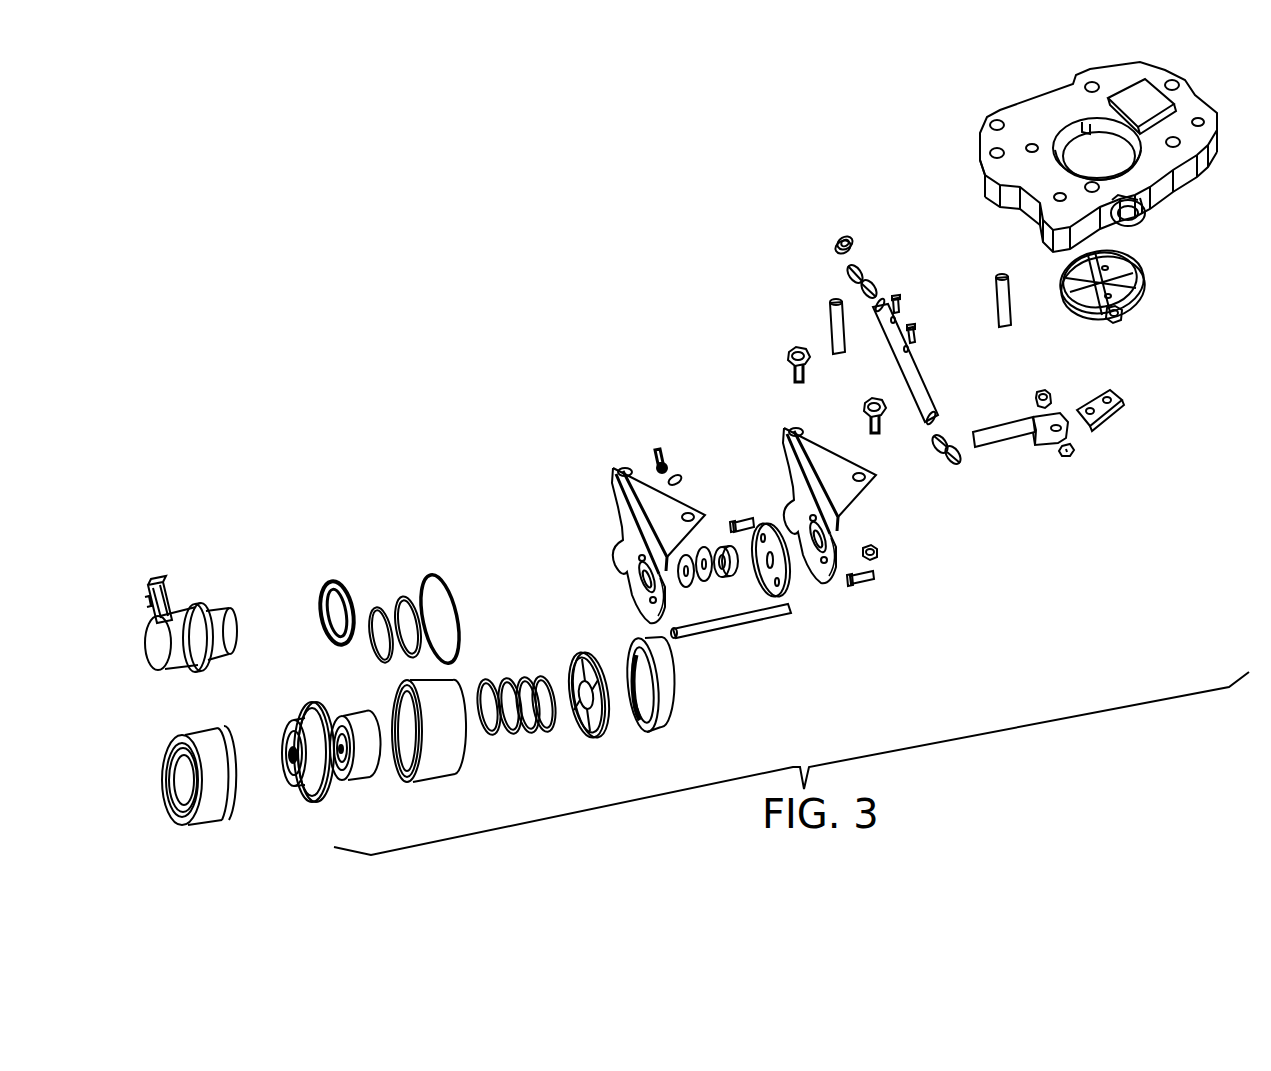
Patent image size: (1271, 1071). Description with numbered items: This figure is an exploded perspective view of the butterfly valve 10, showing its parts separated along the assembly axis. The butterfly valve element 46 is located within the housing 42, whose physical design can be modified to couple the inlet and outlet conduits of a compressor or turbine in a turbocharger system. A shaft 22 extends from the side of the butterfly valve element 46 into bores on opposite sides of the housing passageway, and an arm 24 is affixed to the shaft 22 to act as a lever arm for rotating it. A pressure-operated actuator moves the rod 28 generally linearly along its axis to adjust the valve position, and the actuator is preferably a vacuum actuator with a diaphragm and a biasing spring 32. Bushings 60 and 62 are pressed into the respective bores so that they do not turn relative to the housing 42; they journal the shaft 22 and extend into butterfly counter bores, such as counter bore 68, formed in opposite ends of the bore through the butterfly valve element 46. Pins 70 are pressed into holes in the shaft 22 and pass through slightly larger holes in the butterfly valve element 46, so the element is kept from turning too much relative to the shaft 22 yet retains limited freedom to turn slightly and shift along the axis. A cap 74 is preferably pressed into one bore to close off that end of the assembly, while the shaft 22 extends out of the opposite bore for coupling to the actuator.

The butterfly valve 10 is at (587, 261).
The shaft 22 is at (920, 382).
The arm 24 is at (1103, 415).
The rod 28 is at (1010, 438).
The biasing spring 32 is at (512, 678).
The housing 42 is at (1153, 188).
The butterfly valve element 46 is at (1147, 270).
The bushing 60 is at (870, 268).
The bushing 62 is at (933, 450).
The butterfly counter bore 68 is at (1120, 320).
The pins 70 is at (917, 337).
The cap 74 is at (847, 236).